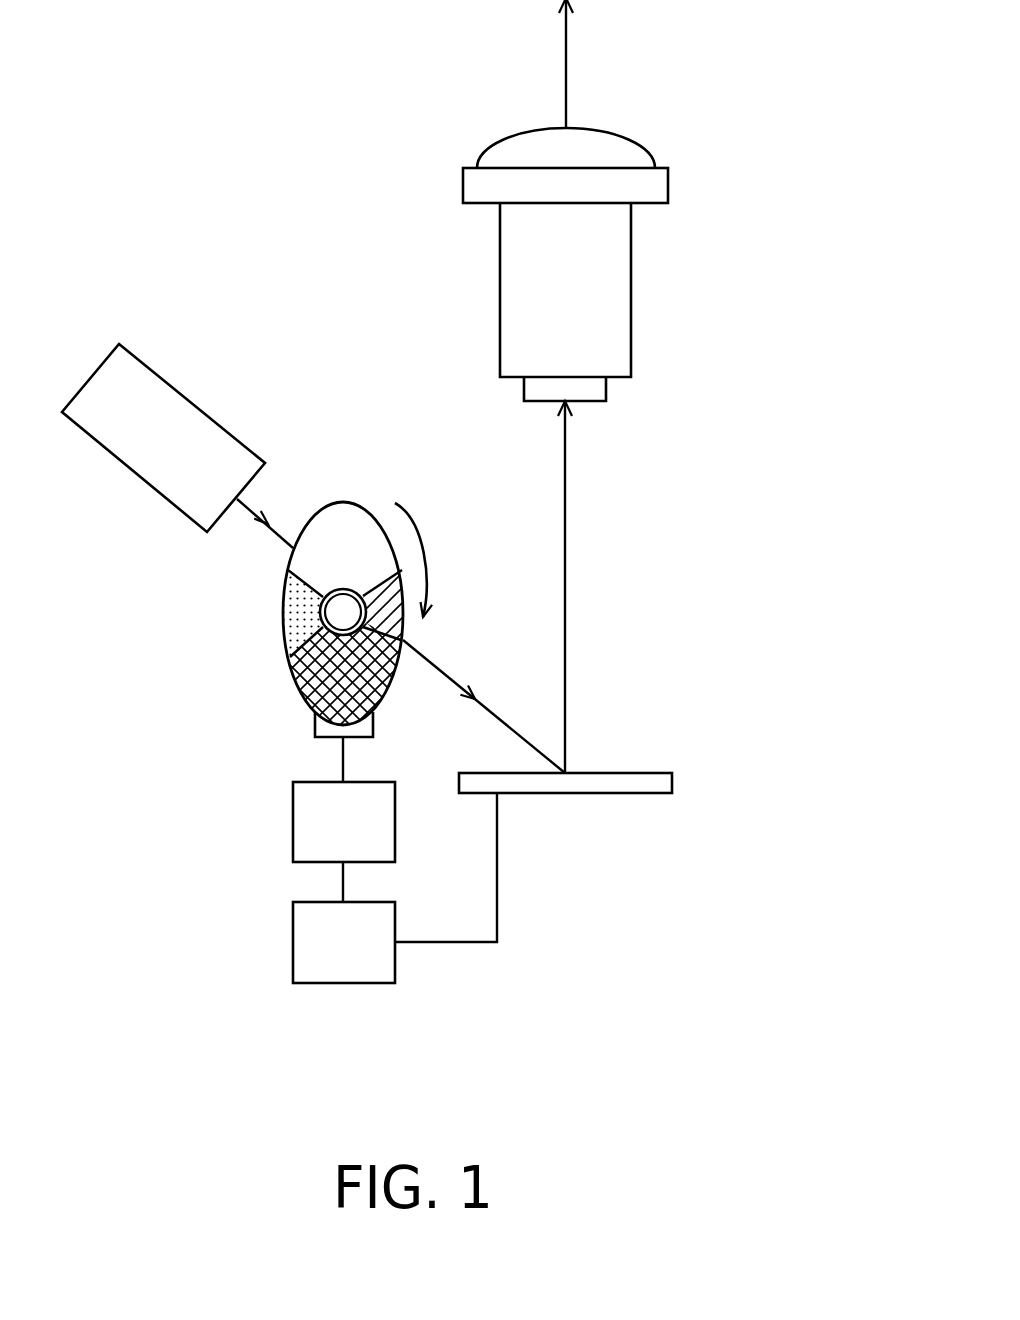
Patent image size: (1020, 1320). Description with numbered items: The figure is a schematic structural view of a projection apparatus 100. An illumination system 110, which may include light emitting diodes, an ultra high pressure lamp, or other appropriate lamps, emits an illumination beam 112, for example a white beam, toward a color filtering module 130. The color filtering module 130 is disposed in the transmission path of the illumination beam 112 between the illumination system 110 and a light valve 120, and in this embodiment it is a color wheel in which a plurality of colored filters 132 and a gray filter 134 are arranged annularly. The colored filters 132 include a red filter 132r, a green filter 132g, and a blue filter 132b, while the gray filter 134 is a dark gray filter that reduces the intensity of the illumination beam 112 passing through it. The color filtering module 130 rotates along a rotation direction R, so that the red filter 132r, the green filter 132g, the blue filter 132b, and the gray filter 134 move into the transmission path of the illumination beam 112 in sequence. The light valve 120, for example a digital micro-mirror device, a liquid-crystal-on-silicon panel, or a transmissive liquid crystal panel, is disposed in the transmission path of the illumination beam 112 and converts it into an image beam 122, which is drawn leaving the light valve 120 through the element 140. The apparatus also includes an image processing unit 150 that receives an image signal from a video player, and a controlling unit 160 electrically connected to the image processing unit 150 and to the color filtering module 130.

The projection apparatus 100 is at (745, 1066).
The illumination system 110 is at (167, 382).
The illumination beam 112 is at (250, 500).
The light valve 120 is at (672, 783).
The image beam 122 is at (567, 540).
The color filtering module 130 is at (308, 647).
The colored filters 132 is at (308, 637).
The green filter 132g is at (305, 562).
The blue filter 132b is at (293, 628).
The red filter 132r is at (397, 620).
The gray filter 134 is at (313, 683).
The projection lens 140 is at (595, 289).
The image processing unit 150 is at (322, 940).
The controlling unit 160 is at (318, 825).
The rotation direction R is at (423, 548).